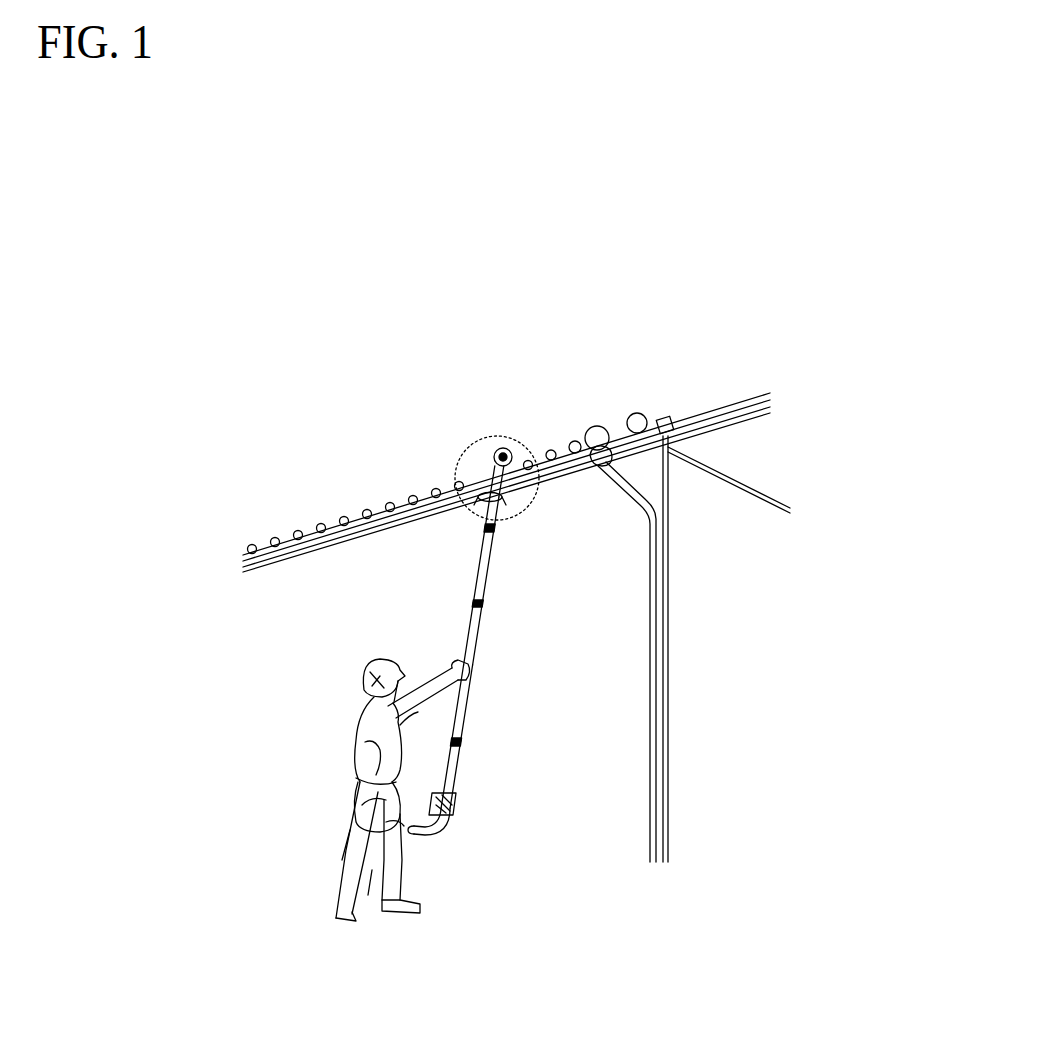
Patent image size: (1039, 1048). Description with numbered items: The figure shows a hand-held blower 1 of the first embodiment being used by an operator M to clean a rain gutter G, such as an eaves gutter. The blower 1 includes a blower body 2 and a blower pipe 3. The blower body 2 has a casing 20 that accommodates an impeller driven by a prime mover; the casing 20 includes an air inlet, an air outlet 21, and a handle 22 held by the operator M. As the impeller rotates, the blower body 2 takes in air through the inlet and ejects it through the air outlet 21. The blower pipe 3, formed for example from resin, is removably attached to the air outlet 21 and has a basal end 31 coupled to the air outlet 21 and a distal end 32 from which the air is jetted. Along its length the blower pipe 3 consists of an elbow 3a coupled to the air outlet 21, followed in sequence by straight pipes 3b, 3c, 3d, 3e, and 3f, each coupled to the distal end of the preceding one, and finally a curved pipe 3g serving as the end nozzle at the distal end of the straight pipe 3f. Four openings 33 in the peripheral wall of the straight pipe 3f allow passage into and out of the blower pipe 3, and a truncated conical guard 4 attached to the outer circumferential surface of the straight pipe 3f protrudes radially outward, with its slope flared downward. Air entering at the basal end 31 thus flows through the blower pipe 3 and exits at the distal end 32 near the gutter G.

The blower 1 is at (487, 789).
The blower body 2 is at (352, 816).
The blower pipe 3 is at (489, 651).
The elbow 3a is at (451, 832).
The straight pipe 3b is at (459, 775).
The straight pipe 3c is at (466, 712).
The straight pipe 3d is at (484, 628).
The straight pipe 3e is at (488, 565).
The straight pipe 3f is at (480, 518).
The curved pipe 3g is at (490, 456).
The guard 4 is at (506, 499).
The casing 20 is at (404, 852).
The air outlet 21 is at (428, 805).
The handle 22 is at (356, 784).
The basal end 31 is at (432, 836).
The distal end 32 is at (514, 455).
The openings 33 is at (503, 504).
The rain gutter G is at (285, 543).
The operator M is at (357, 741).